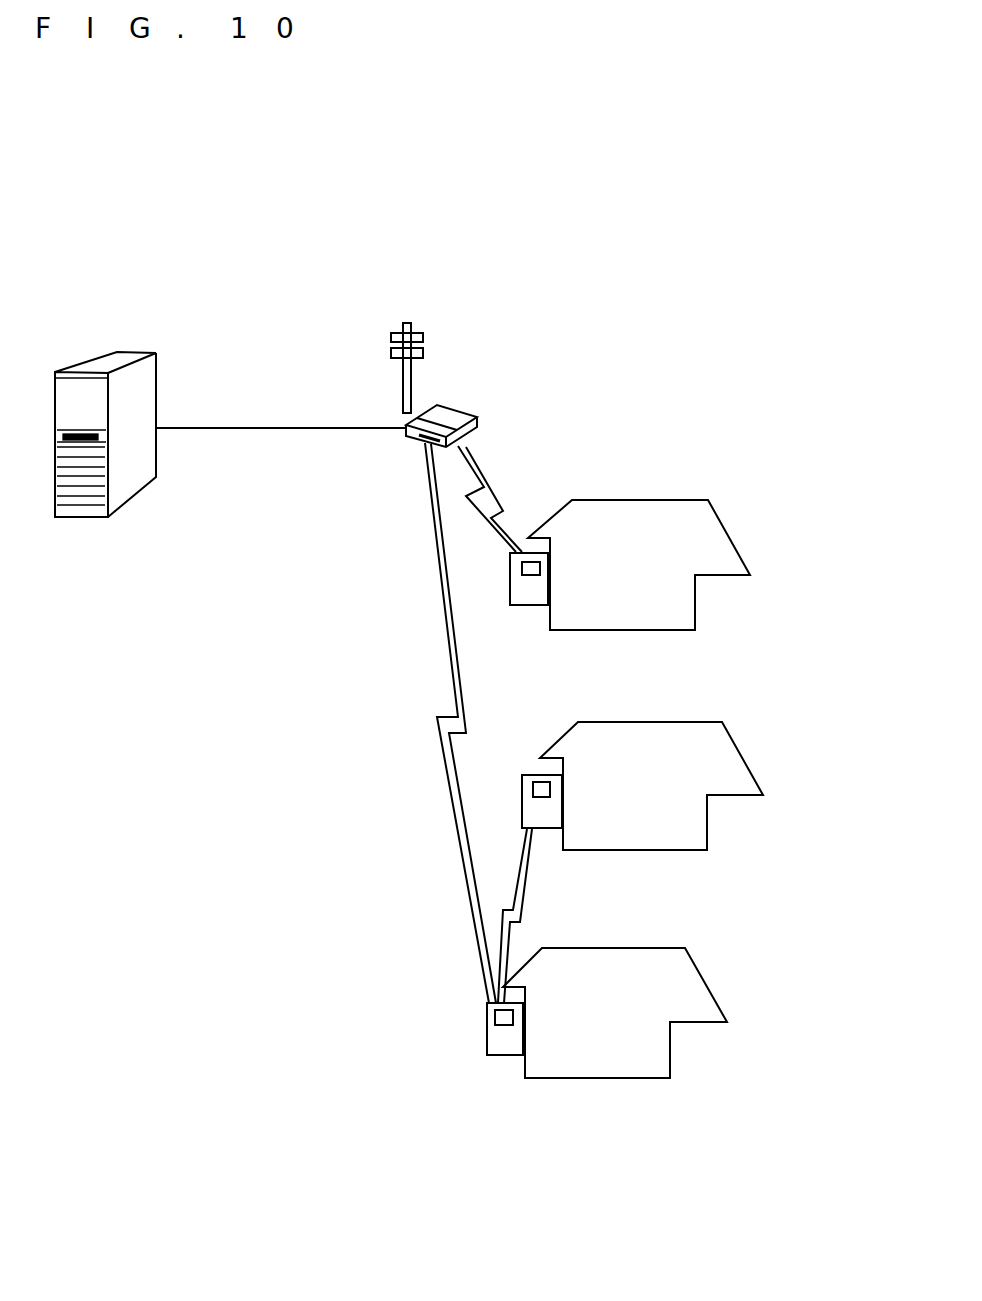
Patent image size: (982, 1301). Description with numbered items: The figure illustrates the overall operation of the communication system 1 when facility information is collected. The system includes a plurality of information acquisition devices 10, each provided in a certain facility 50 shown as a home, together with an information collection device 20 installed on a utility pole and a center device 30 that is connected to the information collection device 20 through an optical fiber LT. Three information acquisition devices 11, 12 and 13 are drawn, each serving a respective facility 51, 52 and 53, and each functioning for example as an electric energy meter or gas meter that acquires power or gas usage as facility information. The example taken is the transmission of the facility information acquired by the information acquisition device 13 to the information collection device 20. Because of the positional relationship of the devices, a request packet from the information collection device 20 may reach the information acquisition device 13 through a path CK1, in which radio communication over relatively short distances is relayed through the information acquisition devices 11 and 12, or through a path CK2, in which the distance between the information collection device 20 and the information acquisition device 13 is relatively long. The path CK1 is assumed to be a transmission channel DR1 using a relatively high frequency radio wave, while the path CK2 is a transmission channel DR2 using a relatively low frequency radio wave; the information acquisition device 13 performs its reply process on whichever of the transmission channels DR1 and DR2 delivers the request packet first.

The communication system 1 is at (656, 340).
The information acquisition device 10 is at (560, 809).
The information acquisition device 11 is at (527, 552).
The information acquisition device 12 is at (547, 830).
The information acquisition device 13 is at (510, 1057).
The information collection device 20 is at (453, 410).
The center device 30 is at (133, 351).
The facility 50 is at (675, 789).
The facility 51 is at (733, 537).
The facility 52 is at (742, 757).
The facility 53 is at (707, 987).
The optical fiber LT is at (278, 426).
The path CK1 is at (524, 895).
The path CK2 is at (451, 804).
The transmission channel DR1 is at (517, 917).
The transmission channel DR2 is at (462, 864).